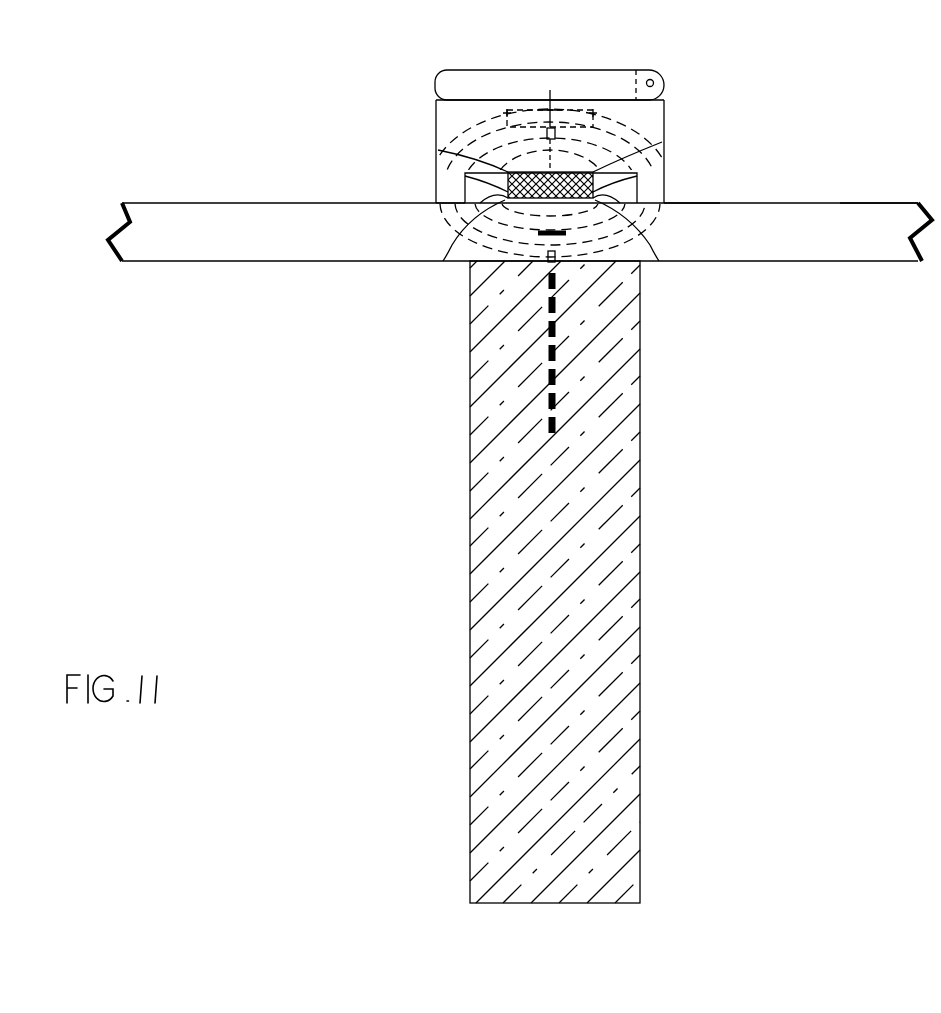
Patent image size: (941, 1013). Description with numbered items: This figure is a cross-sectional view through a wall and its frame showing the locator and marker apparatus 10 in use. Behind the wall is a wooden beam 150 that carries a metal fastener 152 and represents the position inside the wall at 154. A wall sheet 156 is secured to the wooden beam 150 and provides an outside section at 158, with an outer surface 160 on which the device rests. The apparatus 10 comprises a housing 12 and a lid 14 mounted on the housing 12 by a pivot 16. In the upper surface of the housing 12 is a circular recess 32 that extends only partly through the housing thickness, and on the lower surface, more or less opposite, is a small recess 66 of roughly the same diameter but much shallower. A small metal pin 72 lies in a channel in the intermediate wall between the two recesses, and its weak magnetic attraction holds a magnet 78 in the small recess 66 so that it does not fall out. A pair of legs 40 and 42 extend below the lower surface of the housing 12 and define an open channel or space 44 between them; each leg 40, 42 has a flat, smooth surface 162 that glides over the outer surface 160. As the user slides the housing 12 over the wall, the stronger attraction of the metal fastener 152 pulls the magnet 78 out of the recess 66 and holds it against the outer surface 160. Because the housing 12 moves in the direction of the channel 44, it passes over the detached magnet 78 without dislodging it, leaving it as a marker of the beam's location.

The locator and marker apparatus 10 is at (380, 86).
The housing 12 is at (664, 118).
The lid 14 is at (603, 71).
The pivot 16 is at (655, 81).
The circular recess 32 is at (578, 110).
The metal pin 72 is at (546, 128).
The magnet 78 is at (492, 176).
The small recess 66 is at (592, 171).
The open channel or space 44 is at (465, 177).
The leg 40 is at (443, 200).
The leg 42 is at (702, 202).
The wall sheet 156 is at (220, 240).
The outside section 158 is at (856, 137).
The outer surface 160 is at (868, 202).
The position inside the wall 154 is at (840, 360).
The flat, smooth surface 162 is at (445, 205).
The metal fastener 152 is at (553, 368).
The wooden beam 150 is at (480, 481).